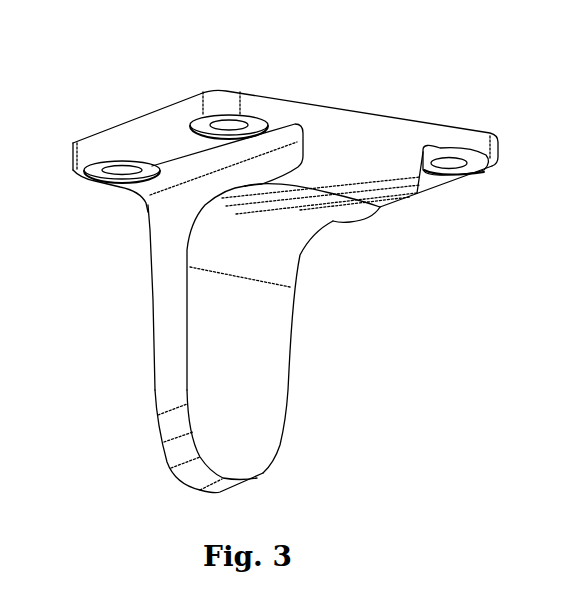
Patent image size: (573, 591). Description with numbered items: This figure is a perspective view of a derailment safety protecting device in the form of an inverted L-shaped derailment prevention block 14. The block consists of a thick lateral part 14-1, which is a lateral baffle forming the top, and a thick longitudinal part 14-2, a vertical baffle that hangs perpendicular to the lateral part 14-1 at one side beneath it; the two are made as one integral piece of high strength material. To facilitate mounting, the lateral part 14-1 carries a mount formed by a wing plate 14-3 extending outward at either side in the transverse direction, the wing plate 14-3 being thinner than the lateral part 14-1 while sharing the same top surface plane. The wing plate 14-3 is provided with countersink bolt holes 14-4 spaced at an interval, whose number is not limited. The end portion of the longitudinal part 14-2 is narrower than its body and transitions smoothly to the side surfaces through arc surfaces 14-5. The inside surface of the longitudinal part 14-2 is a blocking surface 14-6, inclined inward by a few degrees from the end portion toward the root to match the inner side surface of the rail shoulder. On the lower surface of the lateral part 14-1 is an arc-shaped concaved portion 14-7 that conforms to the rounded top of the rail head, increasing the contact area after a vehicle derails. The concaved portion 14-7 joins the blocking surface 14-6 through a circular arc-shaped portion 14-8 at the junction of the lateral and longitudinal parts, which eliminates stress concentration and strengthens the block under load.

The derailment prevention block 14 is at (432, 78).
The lateral part 14-1 is at (290, 150).
The longitudinal part 14-2 is at (163, 307).
The wing plate 14-3 is at (145, 123).
The countersink bolt hole 14-4 is at (120, 165).
The arc surface 14-5 is at (173, 448).
The blocking surface 14-6 is at (277, 325).
The arc-shaped concaved portion 14-7 is at (342, 224).
The circular arc-shaped portion 14-8 is at (287, 240).